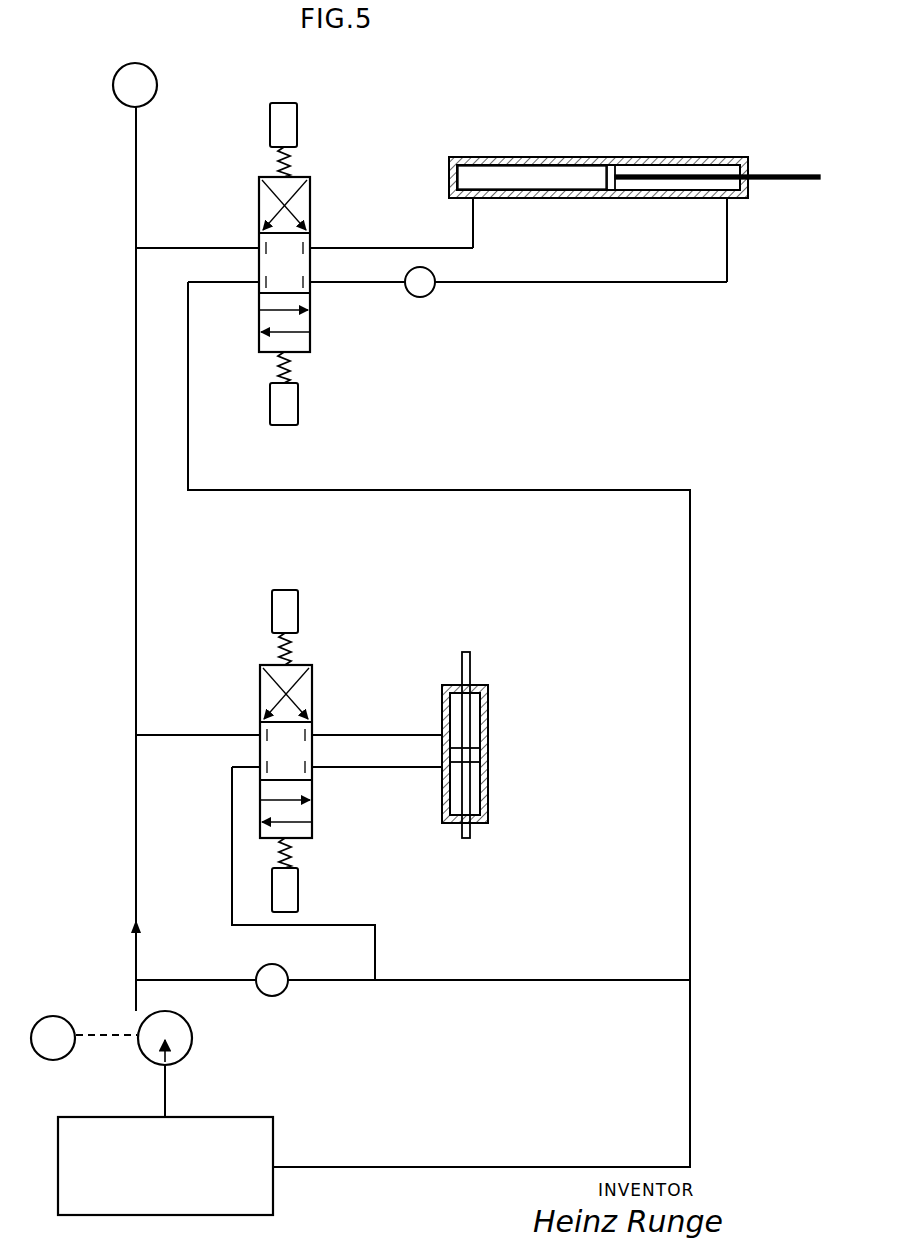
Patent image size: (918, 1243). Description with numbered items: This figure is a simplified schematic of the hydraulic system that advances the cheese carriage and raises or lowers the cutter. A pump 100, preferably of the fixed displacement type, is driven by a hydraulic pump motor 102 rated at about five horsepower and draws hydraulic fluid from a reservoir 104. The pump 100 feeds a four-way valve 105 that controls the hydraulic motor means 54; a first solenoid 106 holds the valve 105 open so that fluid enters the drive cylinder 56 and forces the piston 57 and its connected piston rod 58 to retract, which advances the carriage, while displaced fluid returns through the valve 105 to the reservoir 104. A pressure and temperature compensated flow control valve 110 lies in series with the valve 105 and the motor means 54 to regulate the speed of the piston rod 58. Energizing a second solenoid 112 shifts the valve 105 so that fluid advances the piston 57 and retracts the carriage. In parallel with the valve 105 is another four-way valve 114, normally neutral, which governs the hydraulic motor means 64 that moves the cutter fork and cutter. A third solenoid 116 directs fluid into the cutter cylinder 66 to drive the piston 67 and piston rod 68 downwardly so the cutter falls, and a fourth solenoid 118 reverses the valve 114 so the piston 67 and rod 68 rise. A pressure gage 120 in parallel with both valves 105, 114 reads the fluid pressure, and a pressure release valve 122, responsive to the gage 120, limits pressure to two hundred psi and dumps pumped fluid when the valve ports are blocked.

The hydraulic motor means 54 is at (705, 147).
The drive cylinder 56 is at (523, 160).
The piston 57 is at (613, 160).
The piston rod 58 is at (787, 170).
The hydraulic motor means 64 is at (496, 786).
The cutter cylinder 66 is at (482, 822).
The piston 67 is at (474, 757).
The piston rod 68 is at (470, 660).
The pump 100 is at (192, 1032).
The hydraulic pump motor 102 is at (52, 1013).
The reservoir 104 is at (218, 1116).
The four-way valve 105 is at (310, 347).
The first solenoid 106 is at (297, 105).
The pressure and temperature compensated flow control valve 110 is at (433, 272).
The second solenoid 112 is at (298, 405).
The four-way valve 114 is at (305, 810).
The third solenoid 116 is at (298, 890).
The fourth solenoid 118 is at (298, 600).
The pressure gage 120 is at (157, 76).
The pressure release valve 122 is at (286, 969).